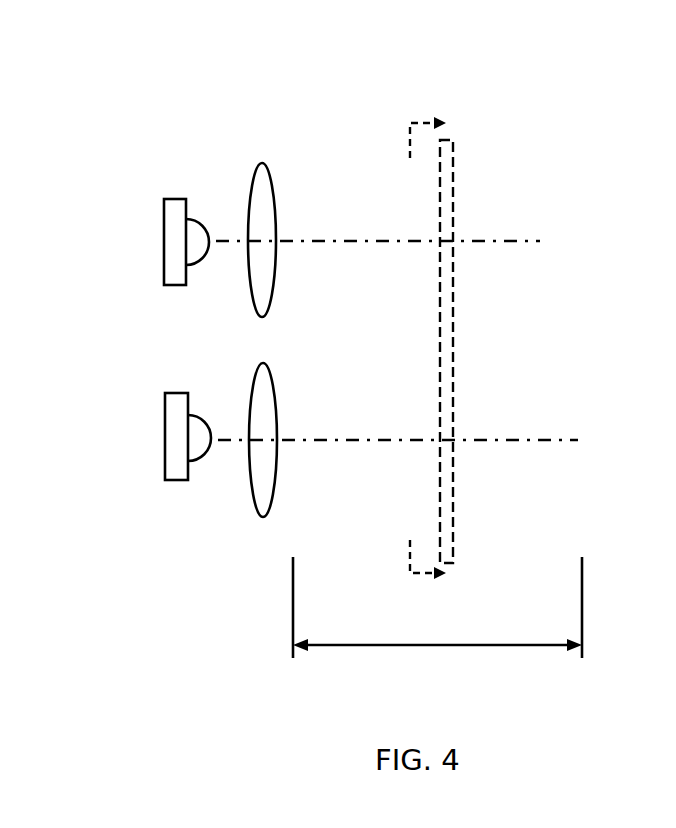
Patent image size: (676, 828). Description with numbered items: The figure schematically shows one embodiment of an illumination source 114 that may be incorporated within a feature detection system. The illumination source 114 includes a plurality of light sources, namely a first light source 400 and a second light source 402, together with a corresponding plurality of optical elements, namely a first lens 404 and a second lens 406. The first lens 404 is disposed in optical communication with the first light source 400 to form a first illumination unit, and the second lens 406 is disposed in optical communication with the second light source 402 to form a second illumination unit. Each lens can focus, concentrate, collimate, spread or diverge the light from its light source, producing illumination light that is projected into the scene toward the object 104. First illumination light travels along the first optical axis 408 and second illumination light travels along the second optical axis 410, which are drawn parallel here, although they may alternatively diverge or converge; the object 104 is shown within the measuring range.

The illumination source 114 is at (191, 43).
The object 104 is at (448, 133).
The first light source 400 is at (164, 233).
The second light source 402 is at (165, 450).
The first lens 404 is at (250, 203).
The second lens 406 is at (253, 482).
The first optical axis 408 is at (548, 242).
The second optical axis 410 is at (558, 437).